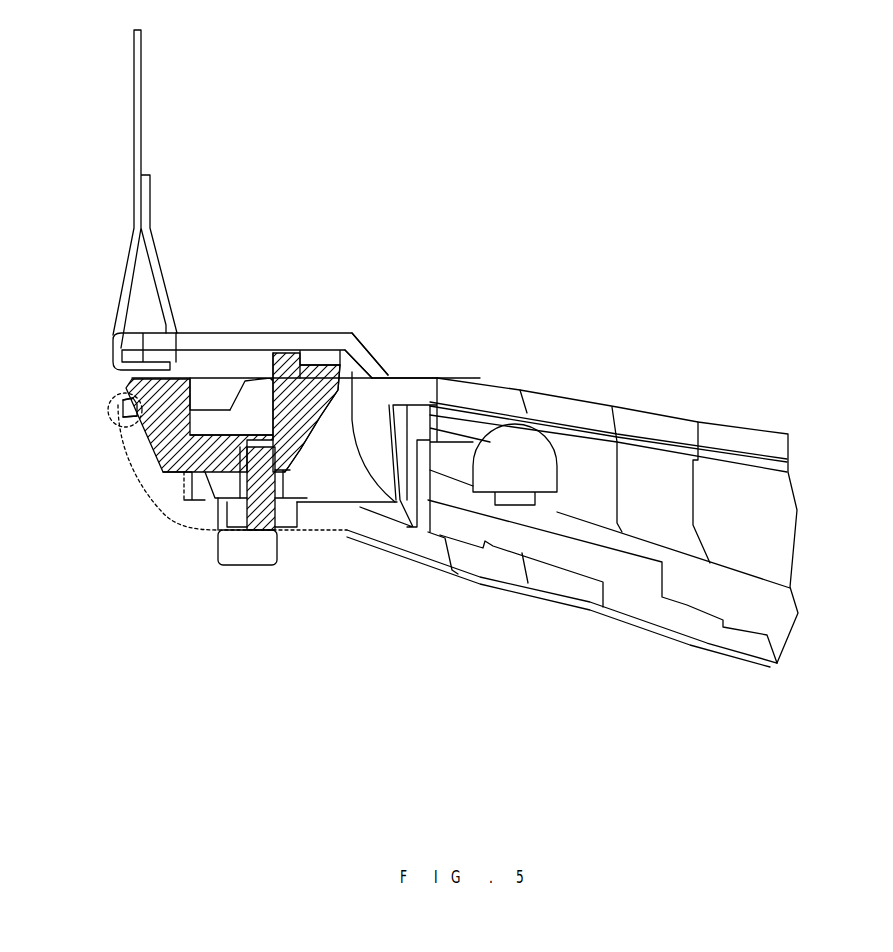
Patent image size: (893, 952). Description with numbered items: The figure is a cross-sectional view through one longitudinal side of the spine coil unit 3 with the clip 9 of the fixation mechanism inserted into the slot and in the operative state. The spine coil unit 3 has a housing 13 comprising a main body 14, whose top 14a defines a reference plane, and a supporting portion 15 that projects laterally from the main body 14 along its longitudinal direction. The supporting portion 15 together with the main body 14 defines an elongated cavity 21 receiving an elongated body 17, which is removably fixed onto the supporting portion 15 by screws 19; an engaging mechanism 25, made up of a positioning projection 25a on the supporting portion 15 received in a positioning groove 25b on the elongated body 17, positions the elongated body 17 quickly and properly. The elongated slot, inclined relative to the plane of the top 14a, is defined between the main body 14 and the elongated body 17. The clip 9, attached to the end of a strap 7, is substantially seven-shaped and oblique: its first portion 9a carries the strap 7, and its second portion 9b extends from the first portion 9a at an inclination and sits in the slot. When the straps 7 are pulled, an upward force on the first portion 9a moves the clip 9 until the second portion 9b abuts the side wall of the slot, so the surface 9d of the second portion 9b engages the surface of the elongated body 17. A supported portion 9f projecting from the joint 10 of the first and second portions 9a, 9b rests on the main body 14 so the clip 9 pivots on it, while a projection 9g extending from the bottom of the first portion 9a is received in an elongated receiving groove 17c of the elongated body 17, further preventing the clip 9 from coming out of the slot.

The spine coil unit 3 is at (660, 385).
The strap 7 is at (144, 65).
The clip 9 is at (191, 330).
The first portion 9a is at (238, 340).
The second portion 9b is at (317, 460).
The surface 9d is at (325, 418).
The supported portion 9f is at (388, 372).
The projection 9g is at (207, 387).
The joint 10 is at (368, 362).
The housing 13 is at (405, 567).
The main body 14 is at (470, 583).
The top 14a is at (440, 372).
The supporting portion 15 is at (143, 497).
The elongated body 17 is at (144, 392).
The elongated receiving groove 17c is at (252, 407).
The screw 19 is at (252, 532).
The elongated cavity 21 is at (182, 482).
The engaging mechanism 25 is at (120, 412).
The positioning projection 25a is at (133, 403).
The positioning groove 25b is at (125, 397).